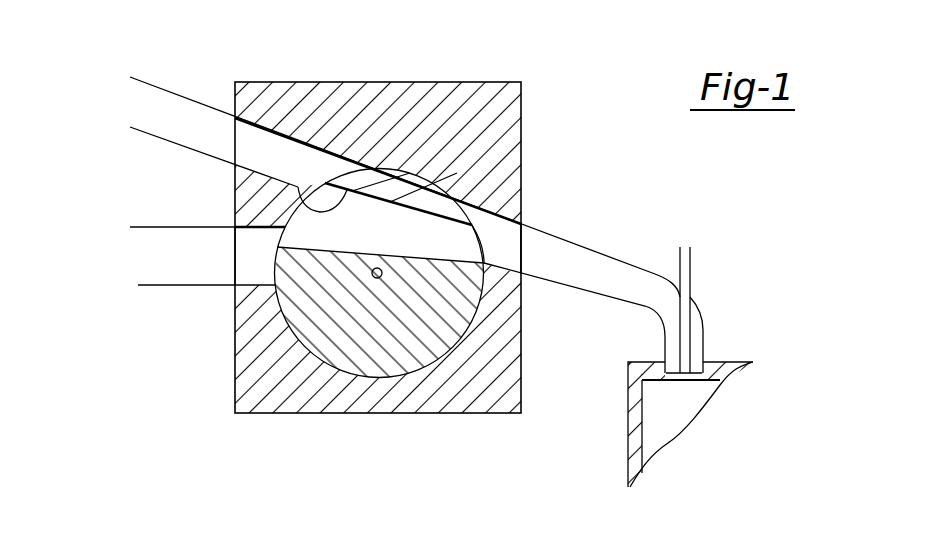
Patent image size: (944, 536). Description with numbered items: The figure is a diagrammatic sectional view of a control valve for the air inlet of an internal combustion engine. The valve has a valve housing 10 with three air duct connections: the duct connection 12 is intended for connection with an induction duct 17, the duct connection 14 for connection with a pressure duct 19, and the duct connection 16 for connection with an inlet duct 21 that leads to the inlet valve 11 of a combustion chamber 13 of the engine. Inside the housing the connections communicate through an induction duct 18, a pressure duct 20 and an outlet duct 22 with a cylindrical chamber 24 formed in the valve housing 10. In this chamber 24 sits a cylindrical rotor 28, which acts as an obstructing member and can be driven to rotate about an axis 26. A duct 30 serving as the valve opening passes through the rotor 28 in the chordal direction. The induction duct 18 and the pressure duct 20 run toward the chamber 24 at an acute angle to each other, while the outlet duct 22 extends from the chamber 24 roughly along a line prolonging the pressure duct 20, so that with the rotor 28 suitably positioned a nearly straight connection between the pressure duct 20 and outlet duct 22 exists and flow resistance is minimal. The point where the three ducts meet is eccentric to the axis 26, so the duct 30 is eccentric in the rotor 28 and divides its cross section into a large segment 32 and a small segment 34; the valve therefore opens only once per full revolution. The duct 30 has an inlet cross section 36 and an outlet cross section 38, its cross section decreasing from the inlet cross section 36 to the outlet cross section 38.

The valve housing 10 is at (505, 368).
The inlet valve 11 is at (684, 355).
The duct connection 12 is at (237, 252).
The combustion chamber 13 is at (662, 405).
The duct connection 14 is at (237, 140).
The duct connection 16 is at (522, 252).
The induction duct 17 is at (165, 255).
The induction duct 18 is at (255, 263).
The pressure duct 19 is at (178, 118).
The pressure duct 20 is at (290, 157).
The inlet duct 21 is at (586, 268).
The outlet duct 22 is at (500, 228).
The cylindrical chamber 24 is at (412, 368).
The axis 26 is at (379, 278).
The cylindrical rotor 28 is at (330, 345).
The duct 30 is at (420, 237).
The large segment 32 is at (302, 312).
The small segment 34 is at (410, 190).
The inlet cross section 36 is at (358, 188).
The outlet cross section 38 is at (497, 240).